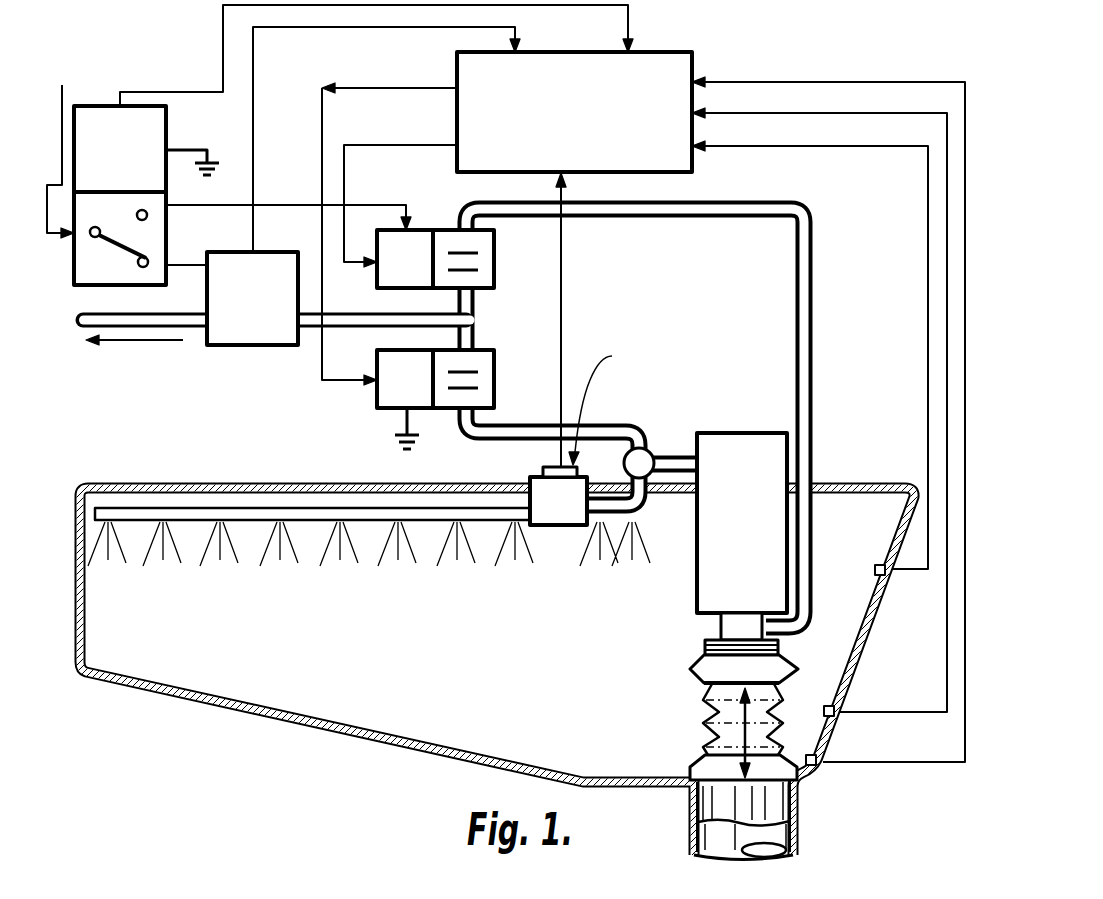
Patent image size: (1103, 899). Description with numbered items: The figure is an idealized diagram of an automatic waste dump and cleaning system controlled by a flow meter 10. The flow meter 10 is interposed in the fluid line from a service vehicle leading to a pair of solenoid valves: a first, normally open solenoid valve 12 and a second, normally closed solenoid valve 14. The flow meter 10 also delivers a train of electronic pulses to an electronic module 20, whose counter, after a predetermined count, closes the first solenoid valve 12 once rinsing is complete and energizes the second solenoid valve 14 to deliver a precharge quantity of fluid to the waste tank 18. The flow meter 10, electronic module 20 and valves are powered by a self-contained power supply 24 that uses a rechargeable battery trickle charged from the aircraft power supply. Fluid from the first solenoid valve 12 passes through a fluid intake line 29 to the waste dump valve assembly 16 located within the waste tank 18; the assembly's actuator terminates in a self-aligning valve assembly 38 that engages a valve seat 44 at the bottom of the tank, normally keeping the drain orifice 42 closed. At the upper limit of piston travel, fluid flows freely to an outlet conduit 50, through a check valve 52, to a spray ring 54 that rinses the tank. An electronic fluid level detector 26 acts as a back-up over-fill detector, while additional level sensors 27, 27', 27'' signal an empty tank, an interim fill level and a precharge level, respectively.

The flow meter 10 is at (230, 345).
The first solenoid valve 12 is at (488, 257).
The second solenoid valve 14 is at (485, 376).
The waste dump valve assembly 16 is at (686, 579).
The waste tank 18 is at (248, 712).
The electronic module 20 is at (702, 50).
The power supply 24 is at (153, 118).
The electronic fluid level detector 26 is at (540, 478).
The level sensor 27 is at (848, 746).
The level sensor 27' is at (905, 587).
The level sensor 27'' is at (869, 695).
The fluid intake line 29 is at (812, 372).
The self-aligning valve assembly 38 is at (680, 665).
The drain orifice 42 is at (777, 806).
The valve seat 44 is at (690, 786).
The outlet conduit 50 is at (683, 463).
The check valve 52 is at (645, 451).
The spray ring 54 is at (207, 512).